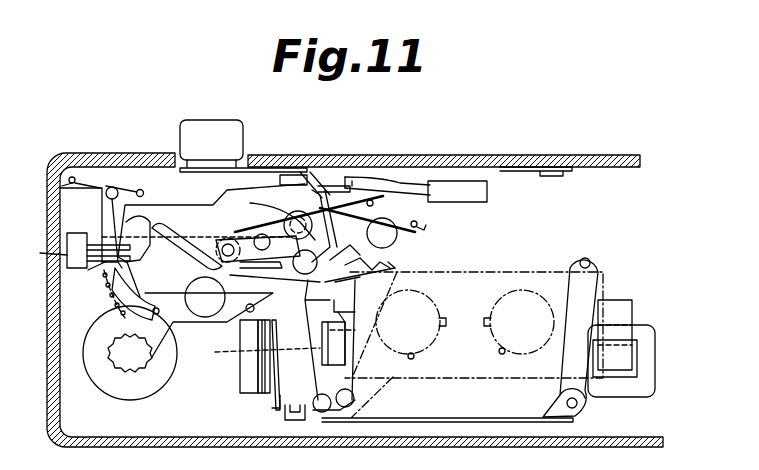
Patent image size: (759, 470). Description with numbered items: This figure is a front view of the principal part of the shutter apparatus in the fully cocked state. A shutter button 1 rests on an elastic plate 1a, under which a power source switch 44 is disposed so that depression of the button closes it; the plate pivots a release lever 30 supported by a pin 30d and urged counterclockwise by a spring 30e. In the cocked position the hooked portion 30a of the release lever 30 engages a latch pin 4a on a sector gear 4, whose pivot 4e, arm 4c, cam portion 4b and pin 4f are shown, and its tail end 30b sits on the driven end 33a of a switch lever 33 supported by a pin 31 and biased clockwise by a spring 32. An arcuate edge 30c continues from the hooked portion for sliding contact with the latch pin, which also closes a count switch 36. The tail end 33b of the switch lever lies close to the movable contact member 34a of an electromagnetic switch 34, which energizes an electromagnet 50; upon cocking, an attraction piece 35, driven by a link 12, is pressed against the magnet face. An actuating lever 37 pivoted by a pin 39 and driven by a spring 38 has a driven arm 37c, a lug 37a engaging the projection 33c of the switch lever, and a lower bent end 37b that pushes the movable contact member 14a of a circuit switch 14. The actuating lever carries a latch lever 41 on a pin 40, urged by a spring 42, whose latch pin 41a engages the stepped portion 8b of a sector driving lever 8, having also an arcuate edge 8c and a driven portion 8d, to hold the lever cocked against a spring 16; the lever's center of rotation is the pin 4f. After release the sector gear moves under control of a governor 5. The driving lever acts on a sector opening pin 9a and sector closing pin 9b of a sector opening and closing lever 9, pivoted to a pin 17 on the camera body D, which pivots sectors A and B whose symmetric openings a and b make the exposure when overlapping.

The shutter button 1 is at (224, 120).
The elastic plate 1a is at (268, 167).
The tail end 30b is at (295, 175).
The lug 37a is at (326, 175).
The projection 33c is at (350, 175).
The pin 30d is at (112, 187).
The release lever 30 is at (145, 182).
The spring 30e is at (75, 184).
The driven arm 37c is at (144, 193).
The driven portion 8d is at (78, 240).
The count switch 36 is at (42, 253).
The sector driving lever 8 is at (150, 262).
The sector gear 4 is at (176, 331).
The pivot 4e is at (200, 205).
The latch pin 4a is at (91, 274).
The pin 4f is at (185, 292).
The arm 4c is at (251, 310).
The cam portion 4b is at (243, 350).
The arcuate edge 8c is at (178, 236).
The stepped portion 8b is at (204, 244).
The latch pin 41a is at (228, 238).
The latch lever 41 is at (260, 234).
The spring 42 is at (250, 238).
The driven end 33a is at (298, 192).
The pin 39 is at (250, 275).
The pin 40 is at (313, 226).
The pin 31 is at (360, 242).
The switch lever 33 is at (396, 240).
The spring 38 is at (374, 204).
The spring 32 is at (424, 220).
The power source switch 44 is at (470, 202).
The movable contact member 34a is at (390, 266).
The sector opening and closing lever 9 is at (352, 388).
The pin 17 is at (348, 338).
The sector opening pin 9a is at (352, 302).
The sector closing pin 9b is at (350, 343).
The electromagnetic switch 34 is at (364, 358).
The actuating lever 37 is at (299, 412).
The lower bent end 37b is at (278, 410).
The circuit switch 14 is at (240, 377).
The movable contact member 14a is at (272, 405).
The governor 5 is at (92, 347).
The spring 16 is at (156, 314).
The hooked portion 30a is at (104, 290).
The arcuate edge 30c is at (110, 308).
The sector B is at (523, 272).
The sector A is at (395, 288).
The tail end 33b is at (411, 322).
The opening a is at (411, 360).
The opening b is at (502, 354).
The link 12 is at (457, 418).
The attraction piece 35 is at (558, 360).
The electromagnet 50 is at (652, 352).
The camera body D is at (518, 156).